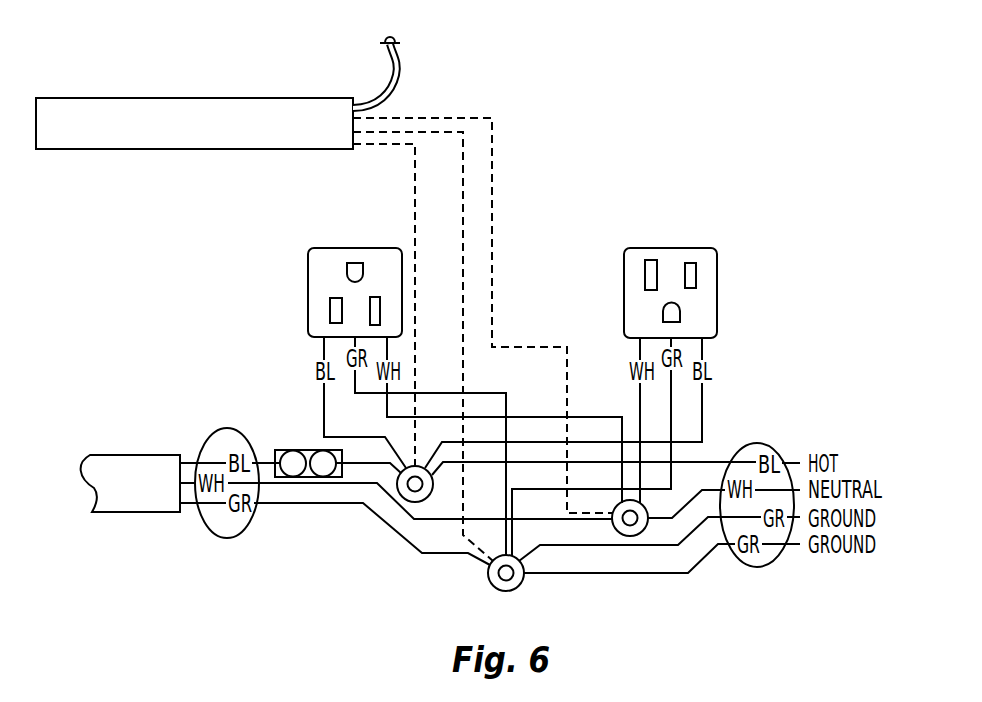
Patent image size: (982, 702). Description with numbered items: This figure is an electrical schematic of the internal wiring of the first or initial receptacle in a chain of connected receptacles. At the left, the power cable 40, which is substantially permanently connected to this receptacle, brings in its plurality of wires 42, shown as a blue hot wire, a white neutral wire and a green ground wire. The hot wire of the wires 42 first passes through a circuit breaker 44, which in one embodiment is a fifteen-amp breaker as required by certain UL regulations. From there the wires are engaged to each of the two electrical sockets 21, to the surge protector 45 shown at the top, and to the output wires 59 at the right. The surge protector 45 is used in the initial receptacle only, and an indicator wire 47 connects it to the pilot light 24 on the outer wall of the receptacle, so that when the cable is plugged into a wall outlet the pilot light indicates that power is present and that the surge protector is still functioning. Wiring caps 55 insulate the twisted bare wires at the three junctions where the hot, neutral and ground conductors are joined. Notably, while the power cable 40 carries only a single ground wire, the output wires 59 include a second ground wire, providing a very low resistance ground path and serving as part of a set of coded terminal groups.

The electrical socket 21 is at (326, 248).
The pilot light 24 is at (395, 41).
The power cable 40 is at (160, 468).
The wires 42 is at (207, 530).
The circuit breaker 44 is at (282, 448).
The surge protector 45 is at (220, 110).
The indicator wire 47 is at (403, 81).
The wiring cap 55 is at (418, 494).
The output wires 59 is at (742, 565).